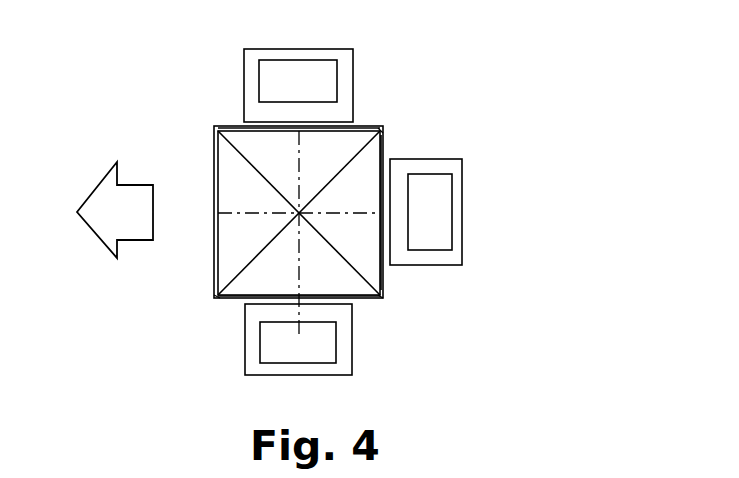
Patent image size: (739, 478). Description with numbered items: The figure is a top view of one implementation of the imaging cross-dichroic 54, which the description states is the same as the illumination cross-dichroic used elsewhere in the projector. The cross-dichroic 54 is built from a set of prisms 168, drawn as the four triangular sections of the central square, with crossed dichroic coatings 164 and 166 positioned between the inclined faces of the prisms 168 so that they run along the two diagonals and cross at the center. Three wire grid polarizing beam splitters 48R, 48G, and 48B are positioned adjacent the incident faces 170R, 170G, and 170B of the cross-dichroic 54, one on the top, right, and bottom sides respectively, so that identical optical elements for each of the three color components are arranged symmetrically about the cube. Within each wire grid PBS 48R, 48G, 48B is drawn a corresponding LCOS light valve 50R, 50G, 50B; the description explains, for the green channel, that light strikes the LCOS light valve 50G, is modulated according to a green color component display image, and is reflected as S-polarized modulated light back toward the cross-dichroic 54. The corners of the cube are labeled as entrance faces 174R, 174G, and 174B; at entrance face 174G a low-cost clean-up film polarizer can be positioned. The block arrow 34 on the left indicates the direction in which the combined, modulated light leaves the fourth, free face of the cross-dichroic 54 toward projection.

The output light direction 34 is at (213, 213).
The wire grid PBS 48R is at (353, 53).
The wire grid PBS 48G is at (463, 238).
The wire grid PBS 48B is at (244, 360).
The red light emitting area 50R is at (280, 58).
The LCOS light valve 50G is at (443, 172).
The blue light emitting area 50B is at (310, 364).
The imaging cross-dichroic 54 is at (213, 142).
The dichroic coating 164 is at (232, 279).
The dichroic coating 166 is at (367, 272).
The prisms 168 is at (348, 156).
The incident face 170R is at (222, 127).
The incident face 170G is at (415, 133).
The incident face 170B is at (372, 298).
The red-side corner edge 174R is at (366, 127).
The entrance face 174G is at (381, 294).
The blue-side corner edge 174B is at (232, 300).